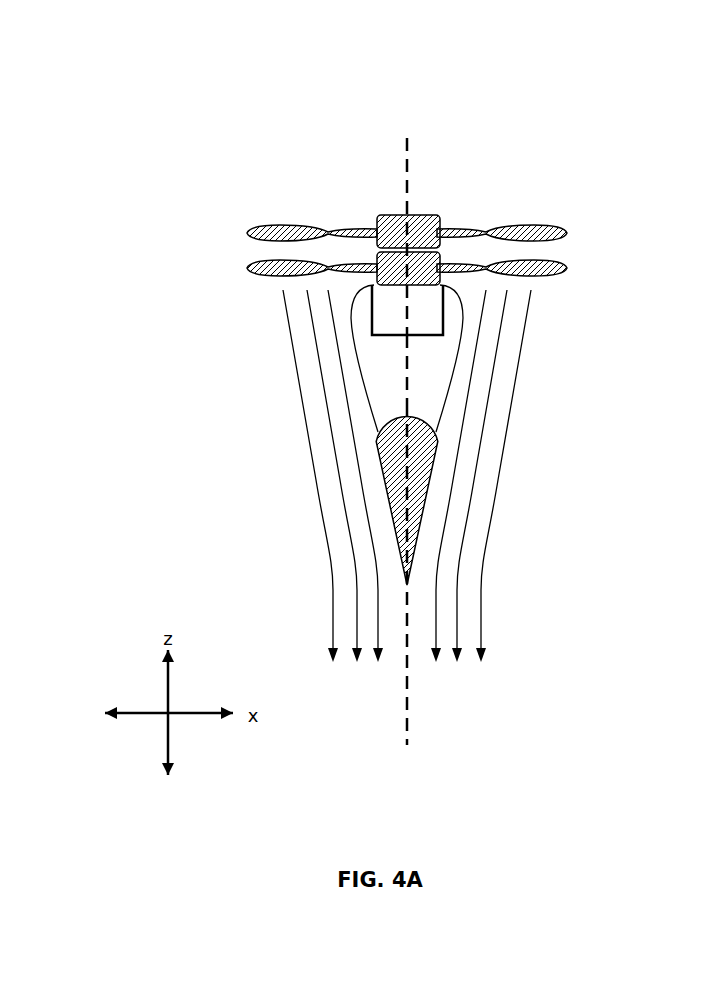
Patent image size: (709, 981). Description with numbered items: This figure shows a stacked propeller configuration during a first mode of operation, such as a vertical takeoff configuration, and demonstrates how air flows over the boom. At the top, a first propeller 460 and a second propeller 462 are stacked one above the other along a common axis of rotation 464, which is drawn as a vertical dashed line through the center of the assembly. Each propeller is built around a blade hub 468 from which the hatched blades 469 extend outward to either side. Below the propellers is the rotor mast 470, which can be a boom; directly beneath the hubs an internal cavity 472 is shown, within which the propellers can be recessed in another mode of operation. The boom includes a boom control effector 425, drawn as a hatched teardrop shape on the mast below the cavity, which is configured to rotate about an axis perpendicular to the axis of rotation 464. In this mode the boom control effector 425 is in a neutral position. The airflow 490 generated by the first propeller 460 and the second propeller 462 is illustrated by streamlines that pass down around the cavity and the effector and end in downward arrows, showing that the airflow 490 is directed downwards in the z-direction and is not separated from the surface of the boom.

The axis of rotation 464 is at (413, 157).
The blade hub 468 is at (381, 219).
The blades 469 is at (280, 268).
The first propeller 460 is at (507, 230).
The second propeller 462 is at (538, 273).
The internal cavity 472 is at (372, 305).
The rotor mast 470 is at (377, 390).
The boom control effector 425 is at (423, 448).
The airflow 490 is at (478, 607).